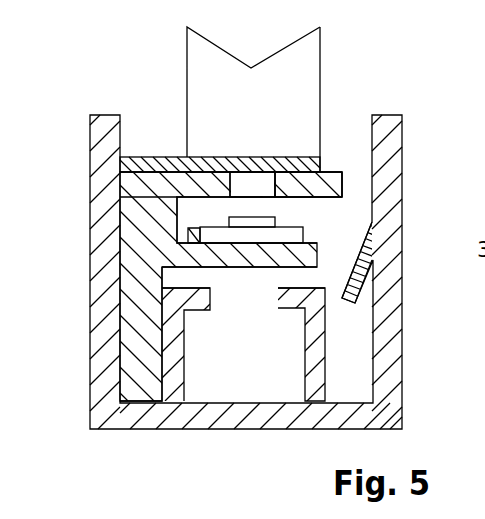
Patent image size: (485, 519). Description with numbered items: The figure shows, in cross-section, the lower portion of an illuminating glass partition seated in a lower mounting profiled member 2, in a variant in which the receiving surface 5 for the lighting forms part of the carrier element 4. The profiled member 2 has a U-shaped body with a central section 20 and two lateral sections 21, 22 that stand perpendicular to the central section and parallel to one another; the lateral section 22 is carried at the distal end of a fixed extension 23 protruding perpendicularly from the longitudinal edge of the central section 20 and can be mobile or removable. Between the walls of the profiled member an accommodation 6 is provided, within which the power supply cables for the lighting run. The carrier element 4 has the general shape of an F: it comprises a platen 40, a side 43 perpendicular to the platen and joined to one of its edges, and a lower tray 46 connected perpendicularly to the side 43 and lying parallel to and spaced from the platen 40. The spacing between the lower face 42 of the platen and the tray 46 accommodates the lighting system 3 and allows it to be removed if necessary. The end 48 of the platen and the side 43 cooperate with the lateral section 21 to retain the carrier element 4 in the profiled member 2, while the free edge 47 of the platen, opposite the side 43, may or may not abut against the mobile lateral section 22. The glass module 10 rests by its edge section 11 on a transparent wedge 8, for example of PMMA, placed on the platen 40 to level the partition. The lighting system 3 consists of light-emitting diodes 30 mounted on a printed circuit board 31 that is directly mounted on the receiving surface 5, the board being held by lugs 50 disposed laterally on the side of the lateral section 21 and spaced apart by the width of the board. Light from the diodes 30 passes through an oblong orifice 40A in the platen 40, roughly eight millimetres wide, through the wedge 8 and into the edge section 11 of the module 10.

The lower mounting profiled member 2 is at (70, 141).
The lighting system 3 is at (143, 240).
The carrier element 4 is at (152, 192).
The receiving surface 5 is at (328, 251).
The accommodation 6 is at (255, 372).
The wedge 8 is at (322, 164).
The glass module 10 is at (307, 59).
The edge section 11 is at (146, 180).
The central section 20 is at (200, 415).
The lateral section 21 is at (108, 249).
The lateral section 22 is at (385, 148).
The fixed extension 23 is at (390, 312).
The light-emitting diodes 30 is at (270, 222).
The support and electrical power supply device 31 is at (297, 237).
The platen 40 is at (205, 180).
The orifice 40A is at (263, 183).
The lower face of the platen 42 is at (323, 198).
The side 43 is at (135, 295).
The lower tray 46 is at (229, 258).
The free edge 47 is at (342, 188).
The end of the platen 48 is at (143, 220).
The lugs 50 is at (174, 222).